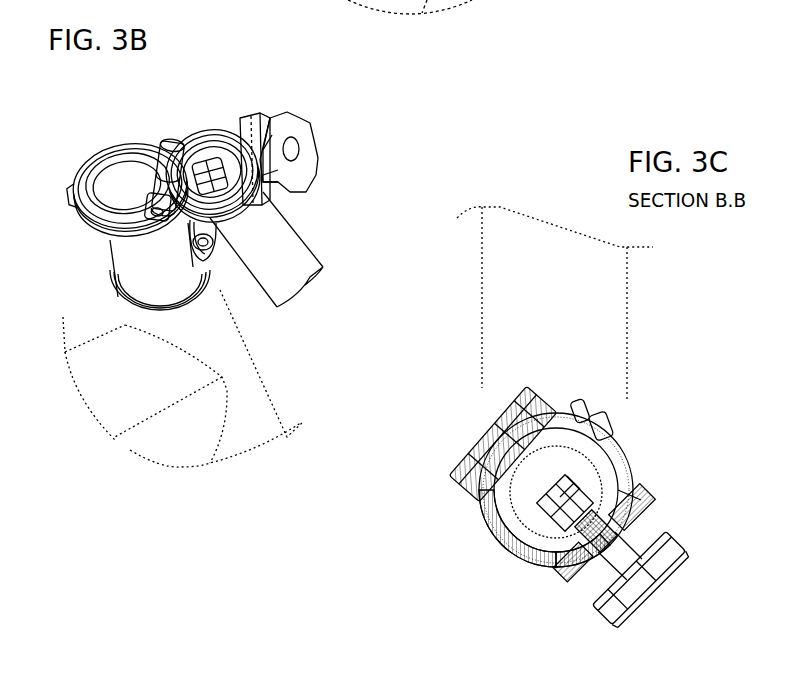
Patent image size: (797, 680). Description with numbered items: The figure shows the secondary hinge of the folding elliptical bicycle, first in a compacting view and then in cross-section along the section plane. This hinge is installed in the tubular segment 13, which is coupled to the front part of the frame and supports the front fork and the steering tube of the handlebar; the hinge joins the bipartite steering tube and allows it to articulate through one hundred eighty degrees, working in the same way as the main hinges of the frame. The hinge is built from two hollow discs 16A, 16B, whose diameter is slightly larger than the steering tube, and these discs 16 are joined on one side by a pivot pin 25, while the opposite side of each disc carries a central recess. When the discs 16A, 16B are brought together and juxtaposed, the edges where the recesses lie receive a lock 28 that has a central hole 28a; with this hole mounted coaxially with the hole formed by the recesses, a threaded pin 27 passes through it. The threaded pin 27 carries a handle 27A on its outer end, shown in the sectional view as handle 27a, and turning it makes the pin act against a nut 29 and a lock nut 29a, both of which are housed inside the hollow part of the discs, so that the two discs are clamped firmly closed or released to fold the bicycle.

In FIG. 3B, the tubular segment 13 is at (220, 342).
In FIG. 3B, the hollow disc 16A is at (128, 152).
In FIG. 3B, the hollow disc 16B is at (200, 135).
In FIG. 3B, the pivot pin 25 is at (176, 126).
In FIG. 3C, the pivot pin 25 is at (545, 398).
In FIG. 3B, the lock 28 is at (250, 145).
In FIG. 3C, the lock 28 is at (565, 588).
In FIG. 3B, the handle 27A is at (300, 122).
In FIG. 3C, the nut 29 is at (587, 497).
In FIG. 3C, the lock nut 29a is at (568, 483).
In FIG. 3C, the hollow discs 16 is at (641, 500).
In FIG. 3C, the central hole 28a is at (643, 523).
In FIG. 3C, the threaded pin 27 is at (591, 578).
In FIG. 3C, the handle 27a is at (650, 558).